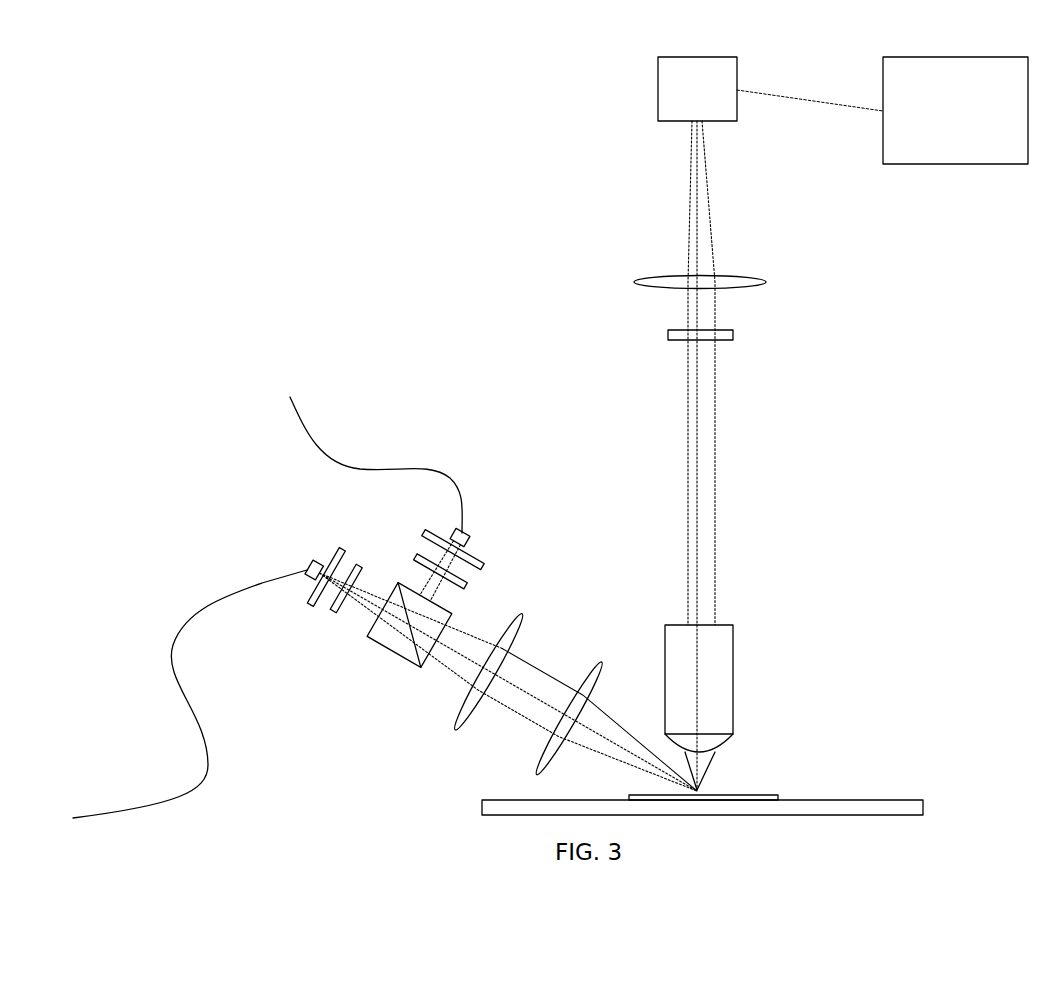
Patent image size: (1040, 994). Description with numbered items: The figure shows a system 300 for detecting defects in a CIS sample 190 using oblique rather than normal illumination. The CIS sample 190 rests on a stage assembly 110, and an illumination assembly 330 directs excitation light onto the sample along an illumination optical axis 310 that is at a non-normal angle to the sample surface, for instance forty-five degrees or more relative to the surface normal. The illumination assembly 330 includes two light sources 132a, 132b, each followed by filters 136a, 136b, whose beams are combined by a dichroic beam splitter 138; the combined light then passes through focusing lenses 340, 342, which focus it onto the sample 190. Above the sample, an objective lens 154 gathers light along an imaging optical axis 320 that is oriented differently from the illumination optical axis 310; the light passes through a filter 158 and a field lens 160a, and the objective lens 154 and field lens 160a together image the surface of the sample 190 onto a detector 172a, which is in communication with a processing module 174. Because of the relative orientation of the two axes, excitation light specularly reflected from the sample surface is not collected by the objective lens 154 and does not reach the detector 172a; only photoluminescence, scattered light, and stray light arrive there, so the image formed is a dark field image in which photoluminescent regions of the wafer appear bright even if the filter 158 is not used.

The system 300 is at (451, 261).
The detector 172a is at (658, 90).
The processing module 174 is at (968, 119).
The field lens 160a is at (766, 282).
The filter 158 is at (726, 335).
The imaging optical axis 320 is at (700, 430).
The objective lens 154 is at (715, 668).
The CIS sample 190 is at (752, 793).
The stage assembly 110 is at (862, 808).
The illumination assembly 330 is at (451, 448).
The light source 132a is at (312, 568).
The filter 136a is at (333, 622).
The dichroic beam splitter 138 is at (404, 655).
The filter 136b is at (418, 562).
The light source 132b is at (470, 548).
The illumination optical axis 310 is at (523, 693).
The focusing lens 340 is at (520, 617).
The focusing lens 342 is at (600, 665).